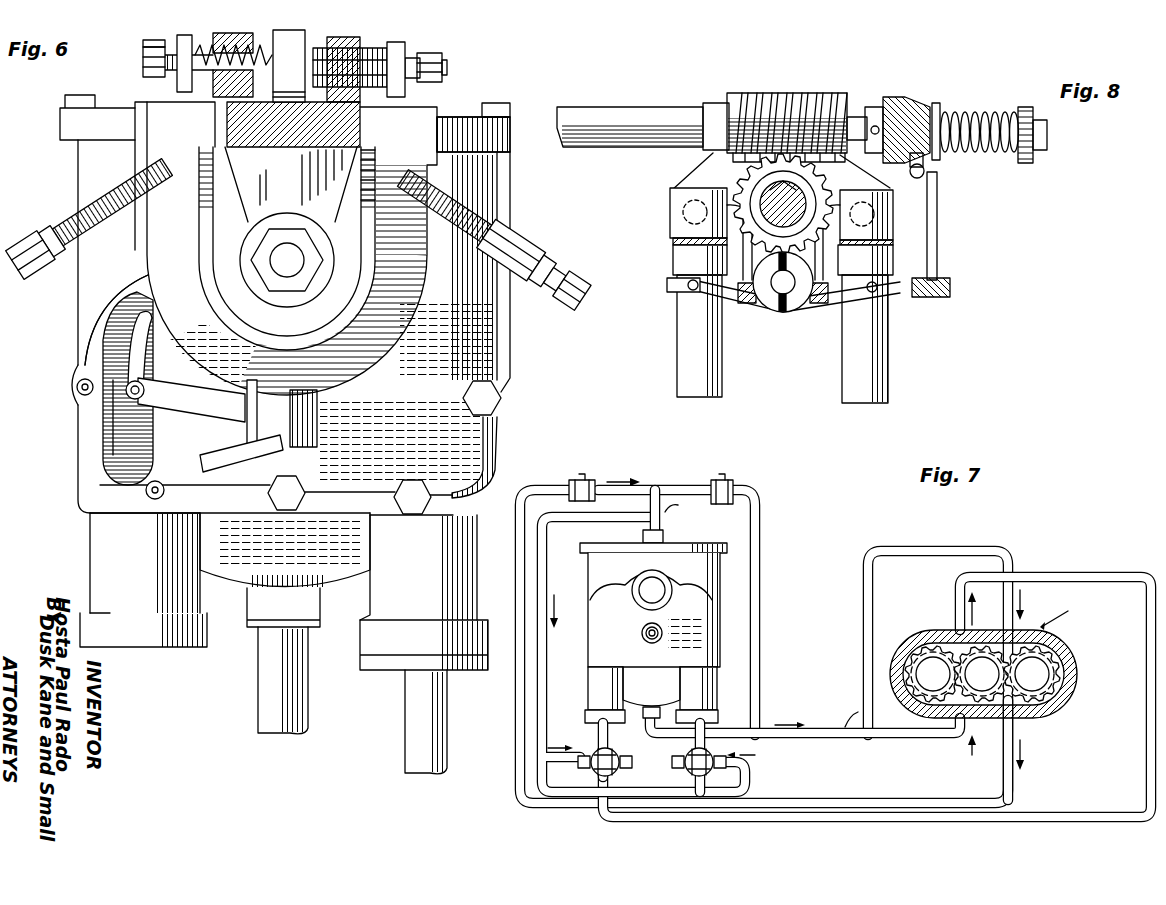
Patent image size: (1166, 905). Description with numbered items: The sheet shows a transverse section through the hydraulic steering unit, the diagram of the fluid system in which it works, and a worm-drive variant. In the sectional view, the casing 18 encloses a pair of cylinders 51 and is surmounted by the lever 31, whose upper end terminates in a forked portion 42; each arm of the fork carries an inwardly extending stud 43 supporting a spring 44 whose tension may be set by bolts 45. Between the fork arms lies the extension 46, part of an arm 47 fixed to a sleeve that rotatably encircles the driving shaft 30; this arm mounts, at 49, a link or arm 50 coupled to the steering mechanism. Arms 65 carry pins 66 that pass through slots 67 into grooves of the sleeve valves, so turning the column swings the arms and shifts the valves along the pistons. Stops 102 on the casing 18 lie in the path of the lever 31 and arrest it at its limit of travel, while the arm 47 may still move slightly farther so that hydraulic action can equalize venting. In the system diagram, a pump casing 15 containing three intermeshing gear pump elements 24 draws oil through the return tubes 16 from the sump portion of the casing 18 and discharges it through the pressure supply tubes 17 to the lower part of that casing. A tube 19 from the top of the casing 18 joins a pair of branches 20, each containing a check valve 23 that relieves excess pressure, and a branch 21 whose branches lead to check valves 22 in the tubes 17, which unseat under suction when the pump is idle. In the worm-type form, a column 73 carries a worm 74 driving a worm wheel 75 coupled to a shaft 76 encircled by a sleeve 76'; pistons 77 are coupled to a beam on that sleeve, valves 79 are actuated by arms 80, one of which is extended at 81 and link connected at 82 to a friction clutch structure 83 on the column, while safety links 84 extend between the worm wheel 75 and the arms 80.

In FIG. 7, the pump casing 15 is at (1043, 626).
In FIG. 6, the return tubes 16 is at (260, 707).
In FIG. 7, the return tubes 16 is at (813, 730).
In FIG. 7, the pressure supply tubes 17 is at (661, 816).
In FIG. 6, the casing 18 is at (494, 446).
In FIG. 7, the casing 18 is at (727, 575).
In FIG. 7, the tube 19 is at (663, 528).
In FIG. 7, the branches 20 is at (762, 510).
In FIG. 7, the branch 21 is at (547, 705).
In FIG. 7, the check valves 22 is at (622, 765).
In FIG. 7, the check valves 23 is at (583, 480).
In FIG. 7, the pump elements 24 is at (935, 642).
In FIG. 6, the driving shaft 30 is at (286, 252).
In FIG. 6, the lever 31 is at (287, 248).
In FIG. 6, the forked portion 42 is at (345, 31).
In FIG. 6, the studs 43 is at (180, 36).
In FIG. 6, the springs 44 is at (177, 80).
In FIG. 6, the bolts 45 is at (143, 60).
In FIG. 6, the extension 46 is at (289, 66).
In FIG. 6, the arm 47 is at (353, 170).
In FIG. 6, the pivot mounting 49 is at (440, 130).
In FIG. 6, the link or arm 50 is at (325, 421).
In FIG. 6, the cylinders 51 is at (93, 553).
In FIG. 7, the cylinders 51 is at (596, 683).
In FIG. 6, the arms 65 is at (137, 425).
In FIG. 6, the studs or pins 66 is at (128, 393).
In FIG. 6, the slots 67 is at (137, 440).
In FIG. 8, the column 73 is at (627, 107).
In FIG. 8, the worm 74 is at (817, 100).
In FIG. 8, the worm wheel 75 is at (752, 245).
In FIG. 8, the shaft 76 is at (808, 216).
In FIG. 8, the sleeve 76' is at (911, 242).
In FIG. 8, the pistons 77 is at (680, 348).
In FIG. 8, the valves 79 is at (680, 260).
In FIG. 8, the arms 80 is at (848, 295).
In FIG. 8, the extension 81 is at (910, 298).
In FIG. 8, the link connection 82 is at (935, 193).
In FIG. 8, the friction or slipping clutch structure 83 is at (915, 118).
In FIG. 8, the links 84 is at (715, 232).
In FIG. 6, the stops 102 is at (108, 212).